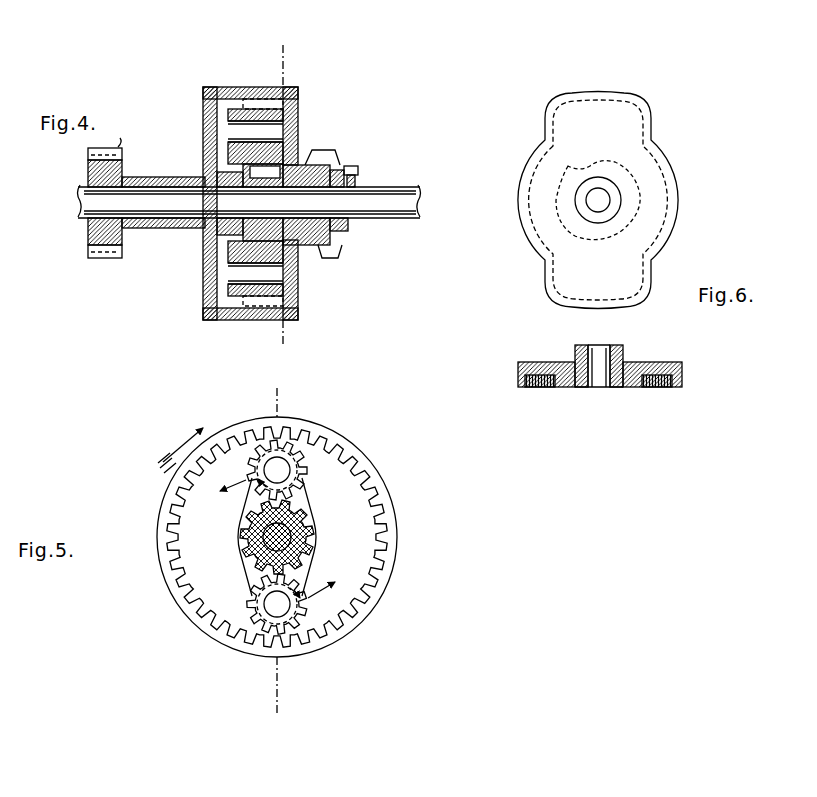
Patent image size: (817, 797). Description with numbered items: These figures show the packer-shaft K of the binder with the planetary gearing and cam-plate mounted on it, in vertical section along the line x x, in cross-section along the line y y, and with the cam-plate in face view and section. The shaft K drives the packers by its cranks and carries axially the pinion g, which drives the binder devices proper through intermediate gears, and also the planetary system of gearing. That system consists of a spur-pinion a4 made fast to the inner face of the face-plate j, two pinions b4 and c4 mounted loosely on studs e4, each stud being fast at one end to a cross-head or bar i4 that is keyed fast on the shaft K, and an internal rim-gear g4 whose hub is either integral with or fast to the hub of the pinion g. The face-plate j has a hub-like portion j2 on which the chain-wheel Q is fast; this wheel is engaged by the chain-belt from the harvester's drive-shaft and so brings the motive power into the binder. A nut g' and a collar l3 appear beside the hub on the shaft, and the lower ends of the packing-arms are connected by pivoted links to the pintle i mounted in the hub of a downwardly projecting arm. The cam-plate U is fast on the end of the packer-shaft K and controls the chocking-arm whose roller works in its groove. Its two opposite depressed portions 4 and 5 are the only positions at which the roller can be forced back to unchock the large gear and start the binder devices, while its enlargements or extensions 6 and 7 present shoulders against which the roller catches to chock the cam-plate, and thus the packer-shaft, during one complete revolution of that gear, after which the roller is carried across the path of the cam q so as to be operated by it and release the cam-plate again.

In FIG. 4, the packer-shaft K is at (249, 190).
In FIG. 5, the packer-shaft K is at (311, 526).
In FIG. 4, the pinion g is at (146, 203).
In FIG. 4, the cam q is at (123, 135).
In FIG. 4, the internal rim-gear g4 is at (262, 96).
In FIG. 5, the internal rim-gear g4 is at (284, 537).
In FIG. 4, the pinion b4 is at (300, 96).
In FIG. 5, the pinion b4 is at (263, 467).
In FIG. 4, the pinion c4 is at (226, 320).
In FIG. 5, the pinion c4 is at (287, 603).
In FIG. 4, the studs e4 is at (252, 202).
In FIG. 5, the studs e4 is at (277, 537).
In FIG. 4, the spur-pinion a4 is at (263, 200).
In FIG. 5, the spur-pinion a4 is at (310, 551).
In FIG. 4, the pintle i is at (230, 194).
In FIG. 5, the cross-head or bar i4 is at (246, 553).
In FIG. 4, the face-plate j is at (292, 302).
In FIG. 4, the hub-like portion j2 is at (311, 160).
In FIG. 4, the set nut g' is at (333, 176).
In FIG. 4, the chain-wheel Q is at (330, 258).
In FIG. 4, the collar l3 is at (350, 233).
In FIG. 5, the section line x x is at (275, 553).
In FIG. 4, the section line y y is at (290, 194).
In FIG. 6, the cam-plate U is at (600, 237).
In FIG. 6, the depressed portion 4 is at (598, 194).
In FIG. 6, the depressed portion 5 is at (613, 238).
In FIG. 6, the enlargement or extension 6 is at (601, 84).
In FIG. 6, the enlargement or extension 7 is at (597, 290).